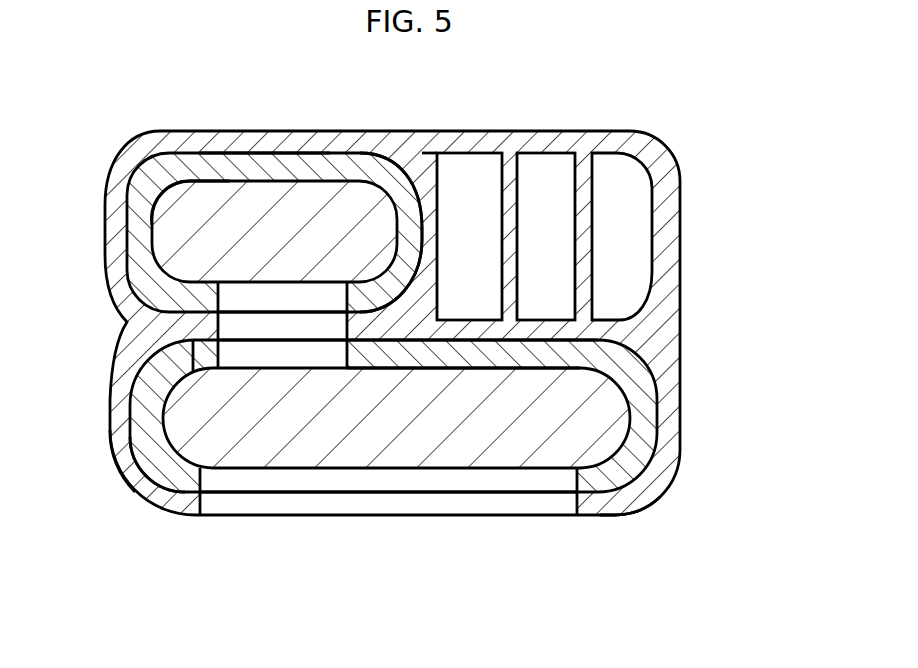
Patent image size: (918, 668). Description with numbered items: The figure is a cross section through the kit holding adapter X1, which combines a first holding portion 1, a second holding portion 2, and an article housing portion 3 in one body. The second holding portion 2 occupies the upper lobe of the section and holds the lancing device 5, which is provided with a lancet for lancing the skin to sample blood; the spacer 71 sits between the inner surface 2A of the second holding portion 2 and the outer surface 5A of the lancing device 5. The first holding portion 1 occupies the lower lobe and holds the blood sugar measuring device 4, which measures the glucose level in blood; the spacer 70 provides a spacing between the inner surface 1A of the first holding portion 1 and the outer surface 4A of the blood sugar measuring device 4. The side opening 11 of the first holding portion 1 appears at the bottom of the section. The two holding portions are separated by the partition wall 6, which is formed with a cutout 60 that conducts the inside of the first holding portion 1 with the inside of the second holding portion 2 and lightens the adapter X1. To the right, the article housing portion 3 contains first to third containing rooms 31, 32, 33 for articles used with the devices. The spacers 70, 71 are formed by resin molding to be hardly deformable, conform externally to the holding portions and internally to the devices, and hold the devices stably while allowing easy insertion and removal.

The first holding portion 1 is at (672, 477).
The inner surface of the first holding portion 1A is at (138, 456).
The second holding portion 2 is at (238, 131).
The inner surface of the second holding portion 2A is at (270, 160).
The article housing portion 3 is at (553, 182).
The first containing room 31 is at (484, 192).
The second containing room 32 is at (575, 192).
The third containing room 33 is at (648, 190).
The blood sugar measuring device 4 is at (605, 405).
The outer surface of the blood sugar measuring device 4A is at (143, 503).
The lancing device 5 is at (297, 219).
The outer surface of the lancing device 5A is at (174, 178).
The partition wall 6 is at (130, 411).
The cutout 60 is at (330, 322).
The spacer 70 is at (483, 352).
The spacer 71 is at (405, 165).
The side opening 11 is at (208, 514).
The kit holding adapter X1 is at (627, 516).